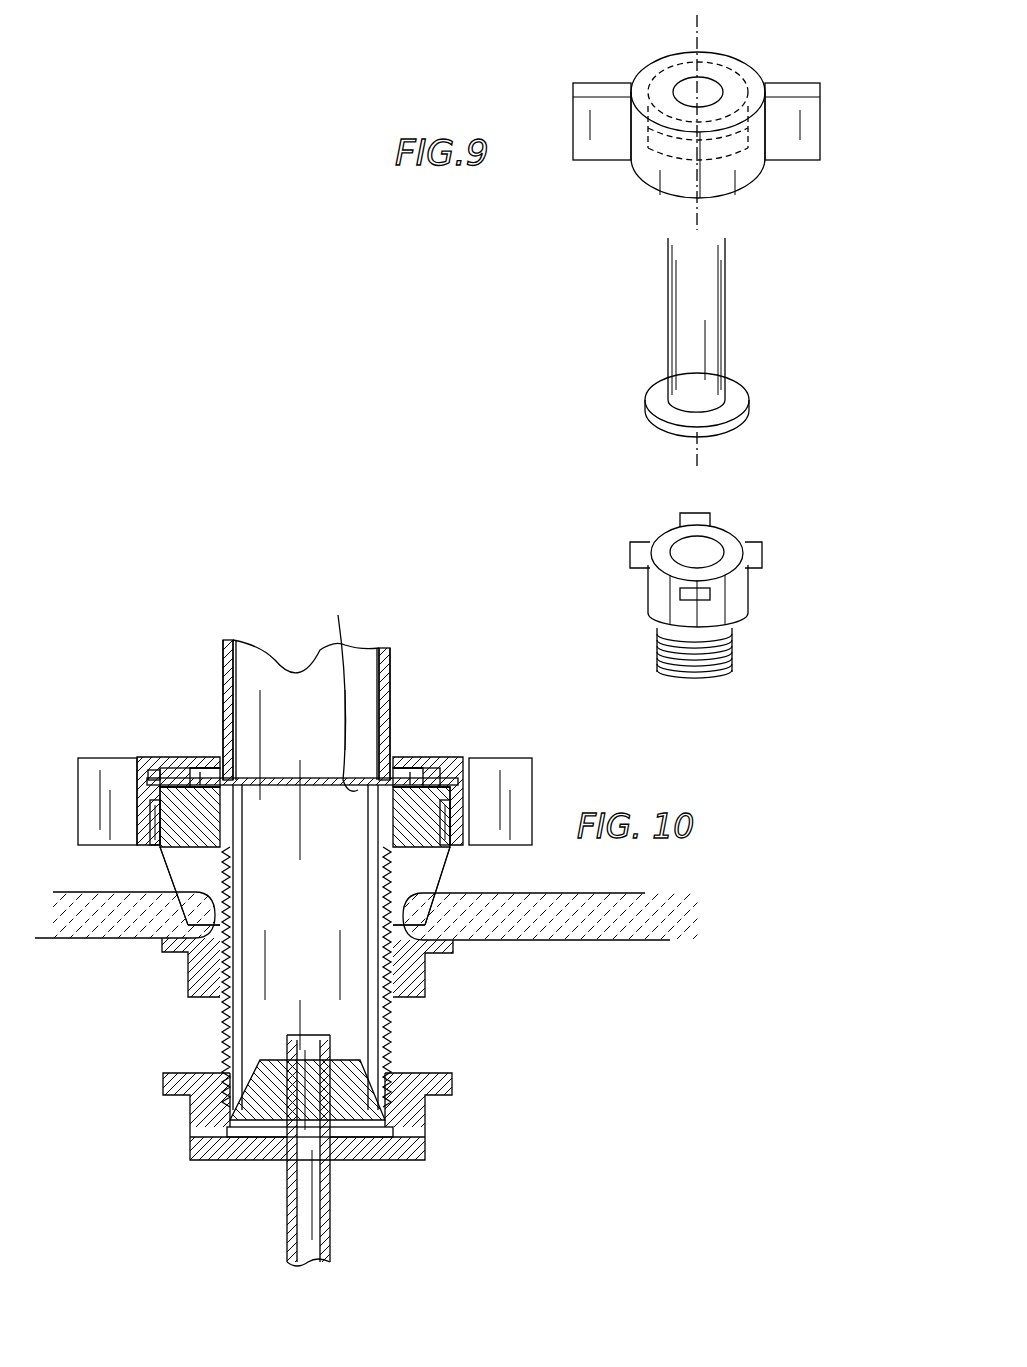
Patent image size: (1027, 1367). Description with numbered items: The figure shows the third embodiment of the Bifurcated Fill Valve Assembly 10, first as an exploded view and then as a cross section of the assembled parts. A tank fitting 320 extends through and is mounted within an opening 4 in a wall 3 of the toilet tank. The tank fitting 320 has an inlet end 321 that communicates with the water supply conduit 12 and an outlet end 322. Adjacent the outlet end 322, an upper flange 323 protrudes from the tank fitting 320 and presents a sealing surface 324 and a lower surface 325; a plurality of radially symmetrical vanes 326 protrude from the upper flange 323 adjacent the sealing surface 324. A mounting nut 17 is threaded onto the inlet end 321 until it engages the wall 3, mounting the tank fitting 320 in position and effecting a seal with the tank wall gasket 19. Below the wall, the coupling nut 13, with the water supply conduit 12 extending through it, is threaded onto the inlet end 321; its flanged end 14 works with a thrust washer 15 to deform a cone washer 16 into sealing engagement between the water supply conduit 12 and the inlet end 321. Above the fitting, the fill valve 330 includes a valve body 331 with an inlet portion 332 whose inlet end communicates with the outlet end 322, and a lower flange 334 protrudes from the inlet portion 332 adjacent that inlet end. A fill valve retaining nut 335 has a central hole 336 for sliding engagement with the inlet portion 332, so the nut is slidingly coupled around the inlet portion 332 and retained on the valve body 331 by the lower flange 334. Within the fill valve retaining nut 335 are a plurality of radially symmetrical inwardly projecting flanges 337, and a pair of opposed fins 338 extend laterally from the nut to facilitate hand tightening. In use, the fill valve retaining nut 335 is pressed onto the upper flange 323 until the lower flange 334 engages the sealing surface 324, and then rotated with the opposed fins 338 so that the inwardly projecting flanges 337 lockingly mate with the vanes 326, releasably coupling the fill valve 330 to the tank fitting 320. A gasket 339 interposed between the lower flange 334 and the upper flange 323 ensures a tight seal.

In FIG. 10, the wall 3 is at (92, 940).
In FIG. 10, the opening 4 is at (192, 960).
In FIG. 10, the Bifurcated Fill Valve Assembly 10 is at (632, 762).
In FIG. 10, the water supply conduit 12 is at (333, 1232).
In FIG. 10, the coupling nut 13 is at (442, 1132).
In FIG. 10, the flanged end 14 is at (390, 1142).
In FIG. 10, the thrust washer 15 is at (247, 1137).
In FIG. 10, the cone washer 16 is at (392, 1058).
In FIG. 10, the mounting nut 17 is at (420, 978).
In FIG. 10, the tank wall gasket 19 is at (212, 858).
In FIG. 9, the tank fitting 320 is at (640, 596).
In FIG. 10, the tank fitting 320 is at (500, 856).
In FIG. 10, the inlet end 321 is at (225, 1110).
In FIG. 9, the outlet end 322 is at (705, 552).
In FIG. 10, the outlet end 322 is at (215, 802).
In FIG. 9, the upper flange 323 is at (748, 605).
In FIG. 10, the upper flange 323 is at (422, 853).
In FIG. 9, the sealing surface 324 is at (712, 580).
In FIG. 10, the sealing surface 324 is at (152, 772).
In FIG. 10, the lower surface 325 is at (412, 896).
In FIG. 9, the radially symmetrical vanes 326 is at (710, 518).
In FIG. 10, the radially symmetrical vanes 326 is at (455, 780).
In FIG. 9, the fill valve 330 is at (610, 312).
In FIG. 9, the valve body 331 is at (730, 284).
In FIG. 10, the valve body 331 is at (394, 656).
In FIG. 9, the inlet portion 332 is at (712, 356).
In FIG. 10, the inlet portion 332 is at (380, 702).
In FIG. 9, the lower flange 334 is at (748, 410).
In FIG. 10, the lower flange 334 is at (405, 778).
In FIG. 9, the fill valve retaining nut 335 is at (768, 80).
In FIG. 10, the fill valve retaining nut 335 is at (160, 756).
In FIG. 9, the central hole 336 is at (680, 82).
In FIG. 10, the central hole 336 is at (386, 766).
In FIG. 9, the radially symmetrical inwardly projecting flanges 337 is at (745, 140).
In FIG. 10, the radially symmetrical inwardly projecting flanges 337 is at (452, 826).
In FIG. 9, the opposed fins 338 is at (578, 118).
In FIG. 10, the opposed fins 338 is at (98, 770).
In FIG. 10, the gasket 339 is at (335, 690).